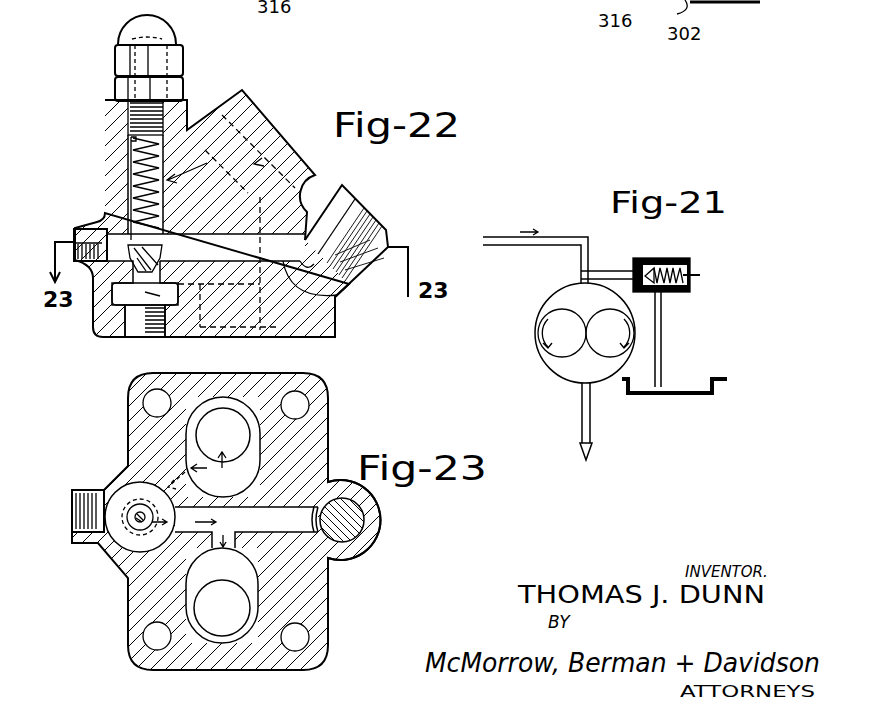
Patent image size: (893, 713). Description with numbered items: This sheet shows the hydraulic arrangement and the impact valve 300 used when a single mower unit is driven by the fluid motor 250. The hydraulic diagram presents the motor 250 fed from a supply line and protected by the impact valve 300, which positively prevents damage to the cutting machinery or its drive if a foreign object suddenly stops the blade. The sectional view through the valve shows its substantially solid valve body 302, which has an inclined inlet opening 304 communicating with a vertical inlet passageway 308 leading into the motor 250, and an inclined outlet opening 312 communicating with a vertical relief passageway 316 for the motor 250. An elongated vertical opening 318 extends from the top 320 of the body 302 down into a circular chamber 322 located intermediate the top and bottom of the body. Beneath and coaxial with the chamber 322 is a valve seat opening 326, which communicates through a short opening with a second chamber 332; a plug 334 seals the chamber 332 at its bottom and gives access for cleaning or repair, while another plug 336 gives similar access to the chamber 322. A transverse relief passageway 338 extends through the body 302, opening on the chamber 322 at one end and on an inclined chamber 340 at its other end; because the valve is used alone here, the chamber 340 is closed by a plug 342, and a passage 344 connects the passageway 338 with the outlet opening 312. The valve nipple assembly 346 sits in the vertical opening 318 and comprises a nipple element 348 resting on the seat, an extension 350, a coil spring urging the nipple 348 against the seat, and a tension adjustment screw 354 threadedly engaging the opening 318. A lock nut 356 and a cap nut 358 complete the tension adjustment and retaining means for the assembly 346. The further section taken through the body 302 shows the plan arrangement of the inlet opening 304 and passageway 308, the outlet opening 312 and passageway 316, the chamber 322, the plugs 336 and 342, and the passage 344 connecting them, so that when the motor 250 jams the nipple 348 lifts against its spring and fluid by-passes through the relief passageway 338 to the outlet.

In FIG. 21, the fluid motor 250 is at (553, 383).
In FIG. 21, the impact valve 300 is at (674, 309).
In FIG. 22, the valve body 302 is at (190, 128).
In FIG. 23, the valve body 302 is at (132, 598).
In FIG. 23, the inlet opening 304 is at (190, 455).
In FIG. 23, the vertical inlet passageway 308 is at (232, 410).
In FIG. 23, the outlet opening 312 is at (247, 568).
In FIG. 23, the vertical relief passageway 316 is at (246, 612).
In FIG. 22, the elongated vertical opening 318 is at (130, 133).
In FIG. 22, the top of the body 320 is at (137, 107).
In FIG. 22, the circular chamber 322 is at (175, 243).
In FIG. 23, the circular chamber 322 is at (120, 497).
In FIG. 22, the valve seat opening 326 is at (112, 288).
In FIG. 22, the second chamber 332 is at (122, 303).
In FIG. 22, the plug 334 is at (133, 327).
In FIG. 22, the plug 336 is at (73, 230).
In FIG. 23, the plug 336 is at (75, 530).
In FIG. 22, the transverse relief passageway 338 is at (330, 305).
In FIG. 23, the transverse relief passageway 338 is at (317, 460).
In FIG. 22, the inclined chamber 340 is at (342, 283).
In FIG. 22, the plug 342 is at (373, 220).
In FIG. 23, the plug 342 is at (350, 527).
In FIG. 23, the passage 344 is at (222, 542).
In FIG. 22, the valve nipple assembly 346 is at (231, 154).
In FIG. 22, the nipple element 348 is at (165, 255).
In FIG. 22, the extension 350 is at (112, 217).
In FIG. 22, the tension adjustment screw 354 is at (140, 78).
In FIG. 22, the lock nut 356 is at (184, 78).
In FIG. 22, the cap nut 358 is at (186, 54).